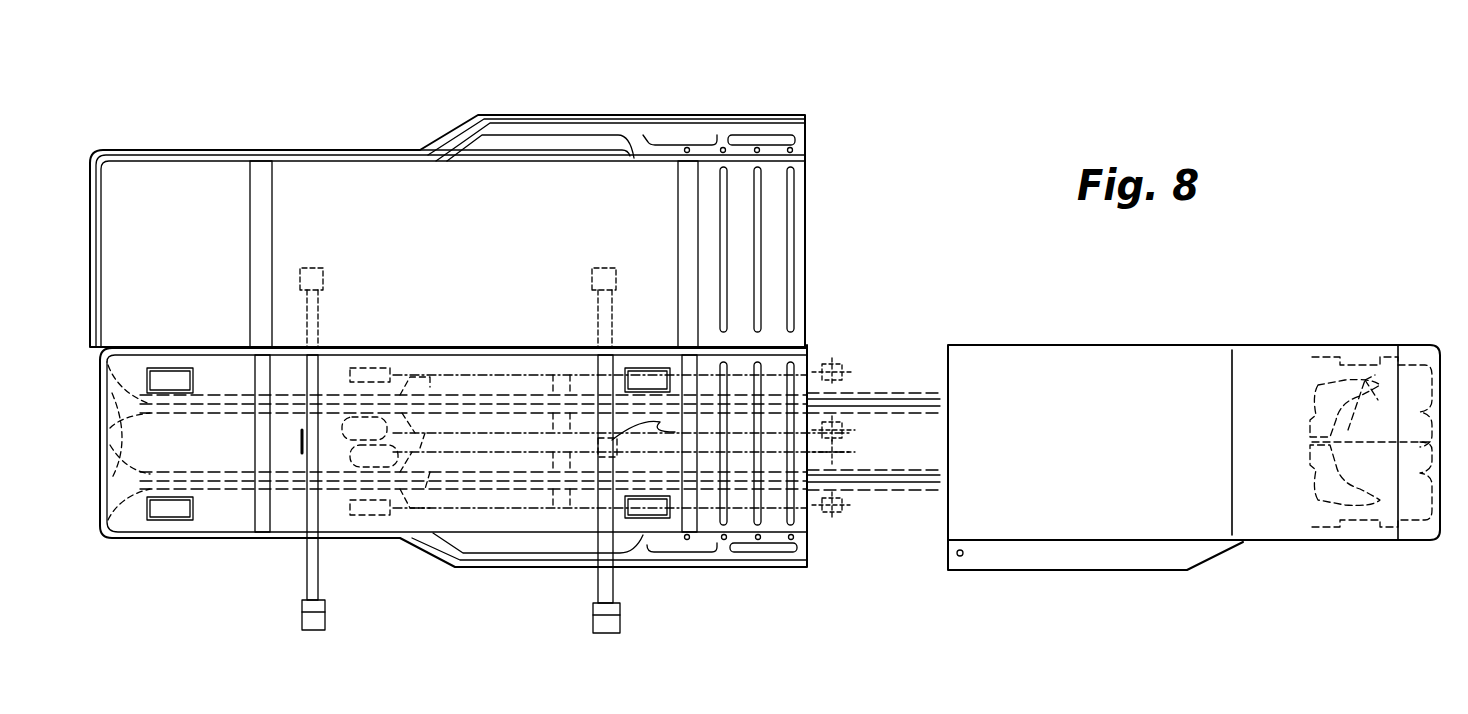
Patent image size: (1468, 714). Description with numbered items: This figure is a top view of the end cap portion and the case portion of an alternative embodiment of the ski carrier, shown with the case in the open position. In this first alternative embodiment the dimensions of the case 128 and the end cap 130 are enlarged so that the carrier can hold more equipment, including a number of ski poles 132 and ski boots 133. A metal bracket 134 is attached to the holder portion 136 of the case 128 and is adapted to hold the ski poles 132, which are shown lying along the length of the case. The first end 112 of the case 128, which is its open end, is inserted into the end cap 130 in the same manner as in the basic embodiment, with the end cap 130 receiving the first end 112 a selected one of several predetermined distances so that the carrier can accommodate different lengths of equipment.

The first end 112 is at (753, 105).
The case 128 is at (370, 138).
The end cap 130 is at (1113, 353).
The ski poles 132 is at (813, 367).
The ski boots 133 is at (1330, 372).
The metal bracket 134 is at (688, 527).
The holder portion 136 is at (327, 537).